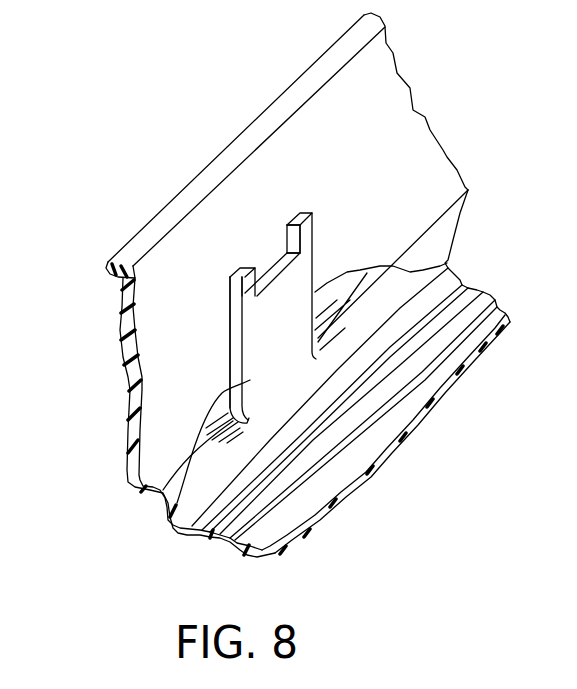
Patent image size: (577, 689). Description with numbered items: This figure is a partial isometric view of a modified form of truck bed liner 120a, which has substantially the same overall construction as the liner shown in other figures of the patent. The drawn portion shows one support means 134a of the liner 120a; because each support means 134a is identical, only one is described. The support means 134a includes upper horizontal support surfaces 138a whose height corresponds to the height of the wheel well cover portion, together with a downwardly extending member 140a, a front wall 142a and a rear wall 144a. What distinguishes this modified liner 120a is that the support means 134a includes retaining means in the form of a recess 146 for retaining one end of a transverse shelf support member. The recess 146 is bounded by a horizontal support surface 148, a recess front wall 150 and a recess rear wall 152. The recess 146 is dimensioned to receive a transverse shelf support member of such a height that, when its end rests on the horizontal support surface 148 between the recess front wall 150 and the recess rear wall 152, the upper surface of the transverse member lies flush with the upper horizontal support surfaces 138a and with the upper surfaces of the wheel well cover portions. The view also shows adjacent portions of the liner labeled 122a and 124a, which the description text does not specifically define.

The liner 120a is at (112, 323).
The bottom flange 122a is at (267, 550).
The top plate 124a is at (425, 178).
The support means 134a is at (283, 345).
The upper horizontal support surfaces 138a is at (96, 365).
The downwardly extending member 140a is at (170, 513).
The front wall 142a is at (447, 263).
The rear wall 144a is at (263, 373).
The recess 146 is at (273, 250).
The horizontal support surface 148 is at (270, 277).
The recess front wall 150 is at (373, 232).
The recess rear wall 152 is at (262, 280).